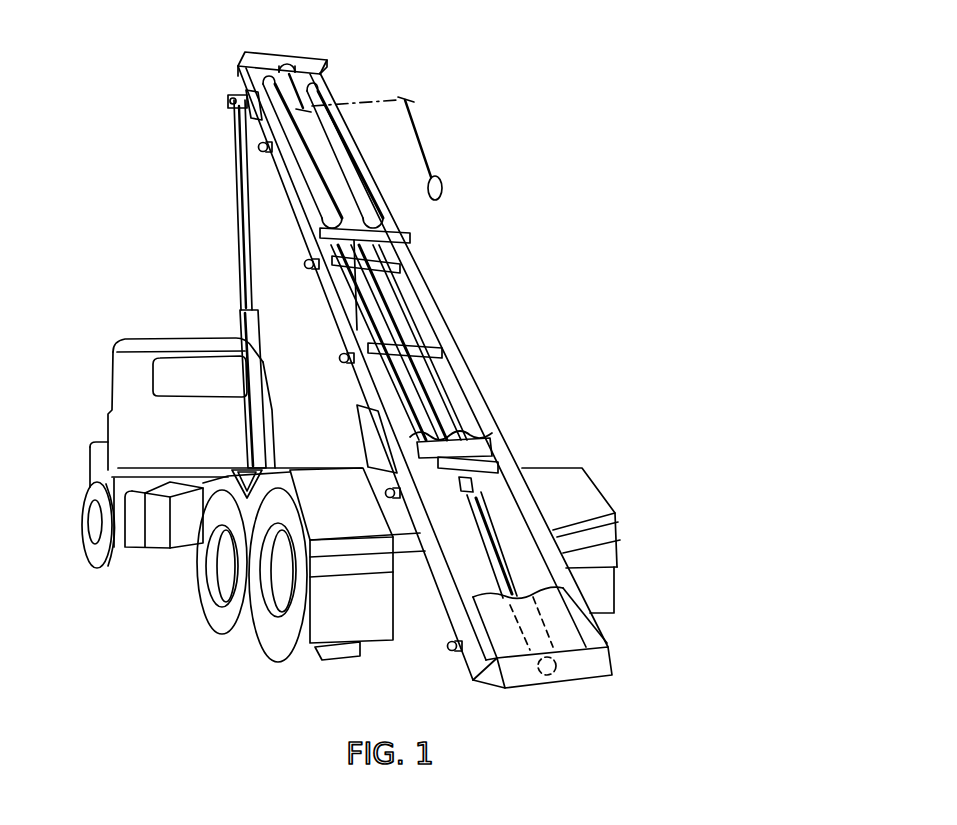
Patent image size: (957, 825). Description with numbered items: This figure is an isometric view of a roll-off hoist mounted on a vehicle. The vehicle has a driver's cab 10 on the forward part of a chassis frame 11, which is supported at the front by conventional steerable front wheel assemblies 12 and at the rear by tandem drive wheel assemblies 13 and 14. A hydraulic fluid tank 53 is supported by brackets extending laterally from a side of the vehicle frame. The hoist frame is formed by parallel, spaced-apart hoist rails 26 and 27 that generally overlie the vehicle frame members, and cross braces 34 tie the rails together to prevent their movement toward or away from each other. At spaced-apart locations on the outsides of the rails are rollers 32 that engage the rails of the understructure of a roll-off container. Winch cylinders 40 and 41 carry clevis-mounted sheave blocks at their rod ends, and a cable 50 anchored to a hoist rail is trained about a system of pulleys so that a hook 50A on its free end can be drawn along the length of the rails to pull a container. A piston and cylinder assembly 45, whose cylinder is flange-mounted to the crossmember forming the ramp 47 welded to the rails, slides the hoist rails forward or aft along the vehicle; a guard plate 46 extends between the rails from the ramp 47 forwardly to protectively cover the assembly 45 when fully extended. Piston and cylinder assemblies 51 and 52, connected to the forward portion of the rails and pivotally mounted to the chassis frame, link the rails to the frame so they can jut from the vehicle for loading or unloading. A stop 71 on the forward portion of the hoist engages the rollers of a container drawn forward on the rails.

The driver's cab 10 is at (140, 338).
The chassis frame 11 is at (156, 468).
The steerable front wheel assemblies 12 is at (82, 525).
The tandem drive wheel assembly 13 is at (198, 607).
The tandem drive wheel assembly 14 is at (250, 653).
The hoist rail 26 is at (338, 313).
The hoist rail 27 is at (424, 272).
The roller 32 is at (264, 152).
The cross brace 34 is at (328, 63).
The winch cylinder 40 is at (266, 82).
The winch cylinder 41 is at (348, 167).
The piston and cylinder assembly 45 is at (481, 512).
The guard plate 46 is at (565, 627).
The ramp 47 is at (580, 669).
The cable 50 is at (301, 74).
The hook 50A is at (443, 188).
The piston and cylinder assembly 51 is at (247, 313).
The piston and cylinder assembly 52 is at (358, 437).
The tank 53 is at (152, 550).
The stop 71 is at (267, 58).